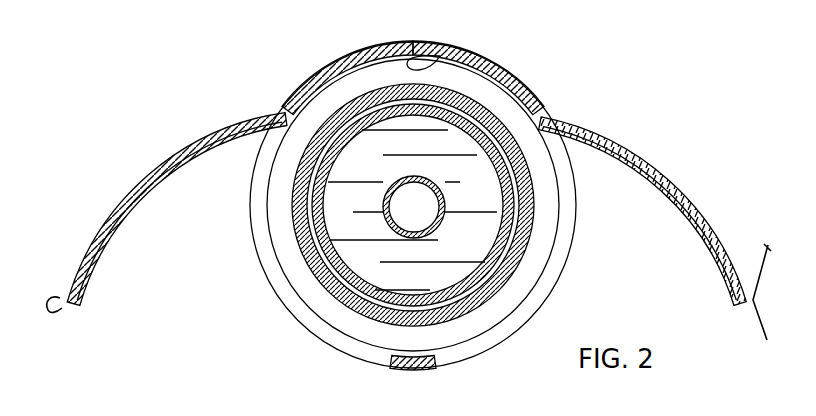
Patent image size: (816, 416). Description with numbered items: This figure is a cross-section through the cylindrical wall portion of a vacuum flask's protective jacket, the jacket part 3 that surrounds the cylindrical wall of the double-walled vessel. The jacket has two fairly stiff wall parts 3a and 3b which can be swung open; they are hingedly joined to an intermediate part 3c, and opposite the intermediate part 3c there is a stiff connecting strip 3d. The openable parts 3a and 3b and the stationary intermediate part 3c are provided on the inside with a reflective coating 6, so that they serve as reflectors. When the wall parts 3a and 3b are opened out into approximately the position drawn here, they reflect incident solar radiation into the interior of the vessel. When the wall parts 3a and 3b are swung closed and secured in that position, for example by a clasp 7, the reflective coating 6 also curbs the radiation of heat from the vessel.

The protective jacket part 3 is at (328, 72).
The openable wall part 3a is at (143, 185).
The openable wall part 3b is at (658, 168).
The intermediate part 3c is at (510, 75).
The connecting strip 3d is at (397, 368).
The reflective coating 6 is at (450, 52).
The clasp 7 is at (50, 310).